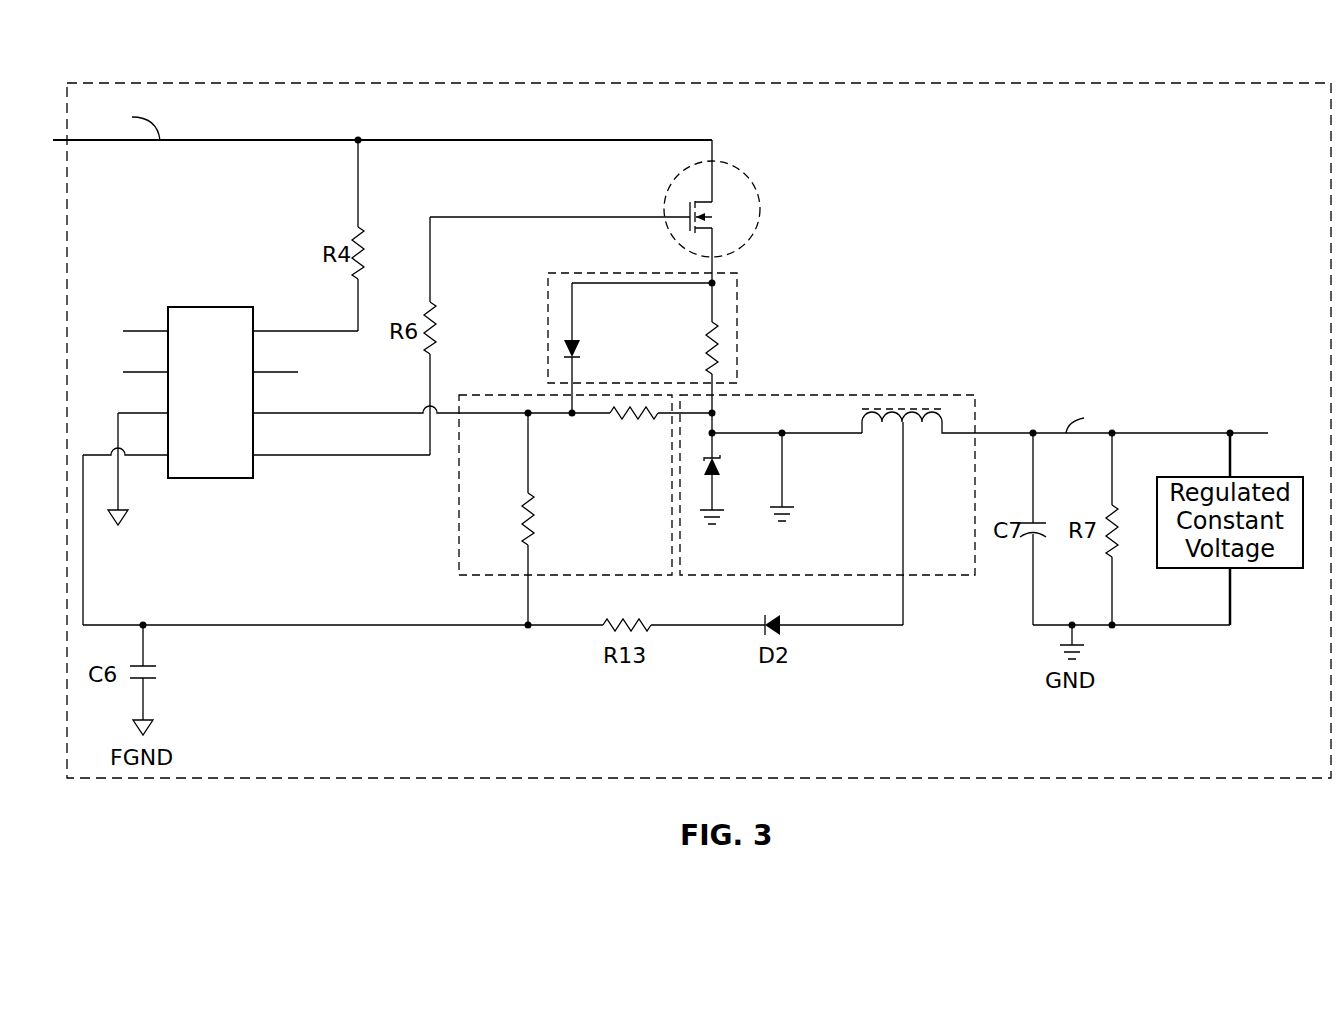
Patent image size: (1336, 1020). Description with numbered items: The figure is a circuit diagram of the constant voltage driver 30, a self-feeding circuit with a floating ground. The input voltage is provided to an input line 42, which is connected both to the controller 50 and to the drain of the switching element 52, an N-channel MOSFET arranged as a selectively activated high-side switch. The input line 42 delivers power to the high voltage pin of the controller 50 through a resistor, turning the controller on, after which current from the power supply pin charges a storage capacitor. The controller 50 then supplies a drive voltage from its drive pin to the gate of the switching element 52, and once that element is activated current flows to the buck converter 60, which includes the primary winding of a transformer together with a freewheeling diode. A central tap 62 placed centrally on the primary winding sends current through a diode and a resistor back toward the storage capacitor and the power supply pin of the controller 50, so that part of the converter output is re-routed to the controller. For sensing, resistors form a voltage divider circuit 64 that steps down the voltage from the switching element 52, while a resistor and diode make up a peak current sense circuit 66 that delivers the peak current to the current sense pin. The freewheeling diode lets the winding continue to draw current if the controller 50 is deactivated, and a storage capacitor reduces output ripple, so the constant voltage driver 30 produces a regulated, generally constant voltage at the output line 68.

The constant voltage driver 30 is at (1283, 82).
The input line 42 is at (270, 140).
The controller 50 is at (208, 306).
The switching element 52 is at (758, 176).
The buck converter 60 is at (934, 391).
The central tap 62 is at (905, 493).
The voltage divider circuit 64 is at (501, 392).
The peak current sense circuit 66 is at (590, 272).
The output line 68 is at (1250, 433).